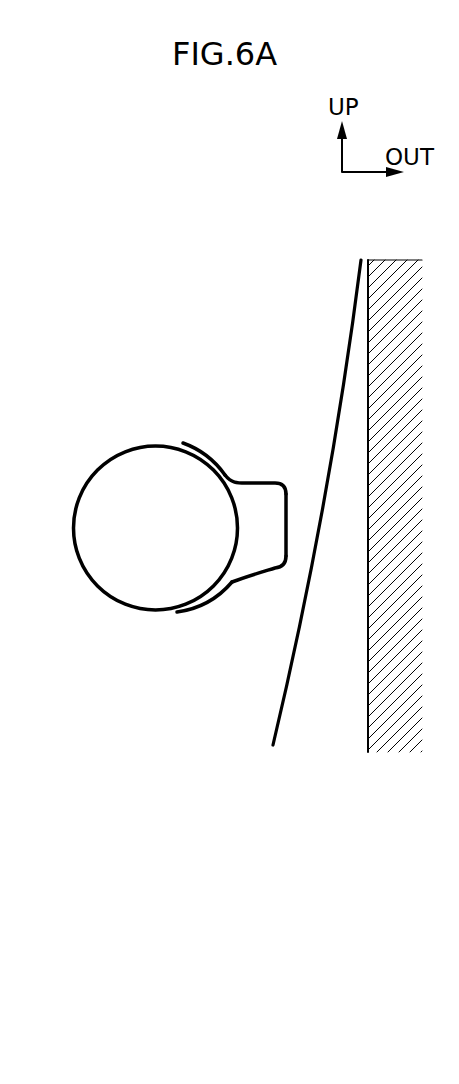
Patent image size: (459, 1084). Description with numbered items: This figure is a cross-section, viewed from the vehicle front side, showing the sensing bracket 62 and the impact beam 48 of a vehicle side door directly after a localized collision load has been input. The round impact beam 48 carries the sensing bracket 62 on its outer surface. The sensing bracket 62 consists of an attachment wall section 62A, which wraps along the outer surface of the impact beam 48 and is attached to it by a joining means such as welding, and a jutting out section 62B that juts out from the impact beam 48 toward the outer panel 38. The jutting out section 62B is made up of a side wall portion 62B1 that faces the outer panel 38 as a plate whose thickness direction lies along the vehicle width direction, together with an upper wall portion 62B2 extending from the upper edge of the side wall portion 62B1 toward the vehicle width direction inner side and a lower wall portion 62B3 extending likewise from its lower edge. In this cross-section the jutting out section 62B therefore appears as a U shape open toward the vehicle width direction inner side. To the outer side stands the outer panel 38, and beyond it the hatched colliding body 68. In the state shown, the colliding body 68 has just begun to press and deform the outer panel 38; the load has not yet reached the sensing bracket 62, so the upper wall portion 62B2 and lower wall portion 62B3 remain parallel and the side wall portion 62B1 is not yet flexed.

The outer panel 38 is at (358, 280).
The impact beam 48 is at (137, 446).
The sensing bracket 62 is at (198, 503).
The attachment wall section 62A is at (204, 452).
The jutting out section 62B is at (201, 573).
The side wall portion 62B1 is at (283, 526).
The upper wall portion 62B2 is at (250, 488).
The lower wall portion 62B3 is at (243, 566).
The colliding body 68 is at (394, 265).